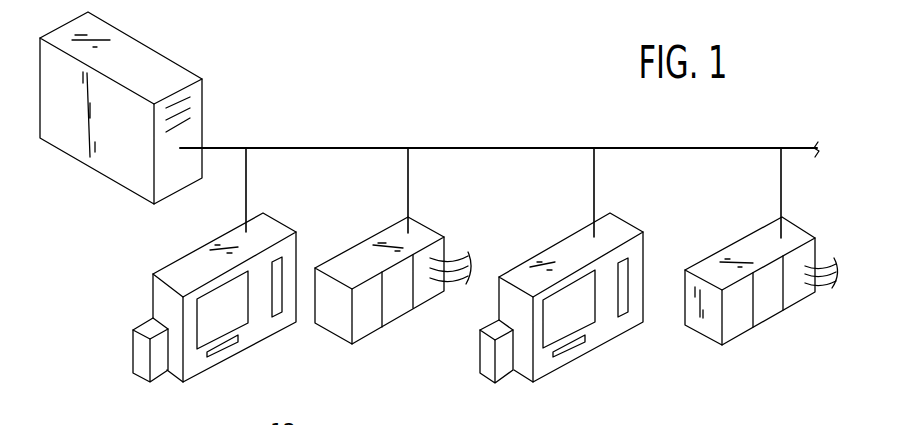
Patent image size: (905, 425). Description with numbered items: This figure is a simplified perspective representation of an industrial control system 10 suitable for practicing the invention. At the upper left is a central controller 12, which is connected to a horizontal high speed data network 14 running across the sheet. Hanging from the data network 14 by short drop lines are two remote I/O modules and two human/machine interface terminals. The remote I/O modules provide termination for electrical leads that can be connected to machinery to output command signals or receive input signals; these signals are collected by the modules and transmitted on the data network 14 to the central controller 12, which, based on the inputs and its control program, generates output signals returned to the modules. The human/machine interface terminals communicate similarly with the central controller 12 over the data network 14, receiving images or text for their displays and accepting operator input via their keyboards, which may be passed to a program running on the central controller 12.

The industrial control system 10 is at (359, 44).
The central controller 12 is at (113, 46).
The high speed data network 14 is at (333, 147).